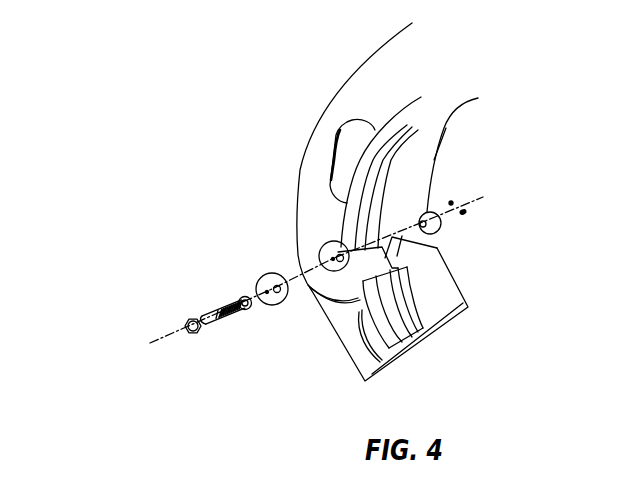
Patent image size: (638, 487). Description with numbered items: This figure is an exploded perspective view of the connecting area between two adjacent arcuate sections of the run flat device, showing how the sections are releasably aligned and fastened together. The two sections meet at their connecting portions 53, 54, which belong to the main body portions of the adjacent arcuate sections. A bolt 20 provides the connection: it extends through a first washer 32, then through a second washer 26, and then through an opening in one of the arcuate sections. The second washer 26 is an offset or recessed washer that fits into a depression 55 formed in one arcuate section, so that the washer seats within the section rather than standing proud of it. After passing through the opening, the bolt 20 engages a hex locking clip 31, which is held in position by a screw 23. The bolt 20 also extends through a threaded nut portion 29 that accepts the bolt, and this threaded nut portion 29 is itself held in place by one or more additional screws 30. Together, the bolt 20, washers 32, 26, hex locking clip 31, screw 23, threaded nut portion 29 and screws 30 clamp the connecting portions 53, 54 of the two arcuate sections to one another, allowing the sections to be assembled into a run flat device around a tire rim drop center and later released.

The bolt 20 is at (212, 322).
The screw 23 is at (175, 335).
The washer 26 is at (270, 280).
The threaded nut portion 29 is at (437, 226).
The screw 30 is at (452, 200).
The hex locking clip 31 is at (192, 318).
The first washer 32 is at (248, 312).
The connecting portion 53 is at (400, 249).
The connecting portion 54 is at (408, 265).
The depression 55 is at (325, 258).